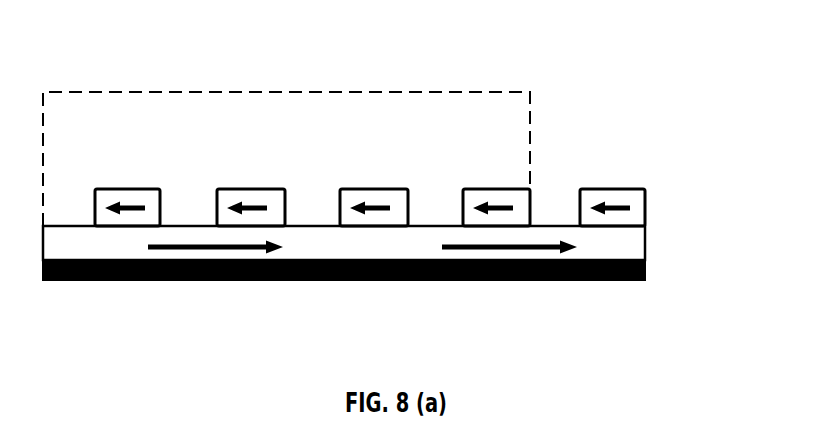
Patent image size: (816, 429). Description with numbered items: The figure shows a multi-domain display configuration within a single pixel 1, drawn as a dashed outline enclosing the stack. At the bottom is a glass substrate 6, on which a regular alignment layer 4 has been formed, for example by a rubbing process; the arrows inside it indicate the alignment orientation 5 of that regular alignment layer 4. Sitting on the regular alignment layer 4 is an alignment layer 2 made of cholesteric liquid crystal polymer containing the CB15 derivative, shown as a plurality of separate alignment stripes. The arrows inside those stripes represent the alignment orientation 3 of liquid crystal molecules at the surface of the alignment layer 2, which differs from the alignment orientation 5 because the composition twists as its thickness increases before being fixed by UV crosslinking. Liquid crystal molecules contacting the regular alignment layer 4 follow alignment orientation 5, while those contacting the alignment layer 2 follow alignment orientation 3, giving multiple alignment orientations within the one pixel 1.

The single pixel 1 is at (507, 117).
The alignment layer 2 is at (617, 190).
The alignment orientation 3 is at (130, 203).
The regular alignment layer 4 is at (638, 248).
The alignment orientation 5 is at (222, 250).
The glass substrate 6 is at (605, 280).